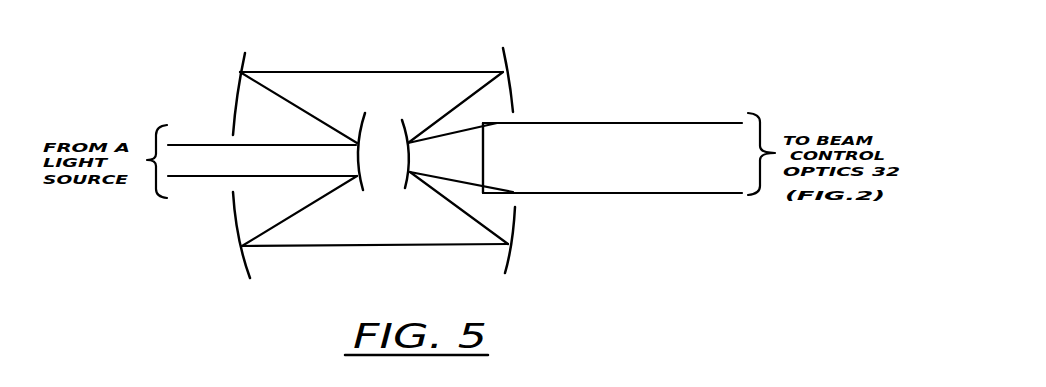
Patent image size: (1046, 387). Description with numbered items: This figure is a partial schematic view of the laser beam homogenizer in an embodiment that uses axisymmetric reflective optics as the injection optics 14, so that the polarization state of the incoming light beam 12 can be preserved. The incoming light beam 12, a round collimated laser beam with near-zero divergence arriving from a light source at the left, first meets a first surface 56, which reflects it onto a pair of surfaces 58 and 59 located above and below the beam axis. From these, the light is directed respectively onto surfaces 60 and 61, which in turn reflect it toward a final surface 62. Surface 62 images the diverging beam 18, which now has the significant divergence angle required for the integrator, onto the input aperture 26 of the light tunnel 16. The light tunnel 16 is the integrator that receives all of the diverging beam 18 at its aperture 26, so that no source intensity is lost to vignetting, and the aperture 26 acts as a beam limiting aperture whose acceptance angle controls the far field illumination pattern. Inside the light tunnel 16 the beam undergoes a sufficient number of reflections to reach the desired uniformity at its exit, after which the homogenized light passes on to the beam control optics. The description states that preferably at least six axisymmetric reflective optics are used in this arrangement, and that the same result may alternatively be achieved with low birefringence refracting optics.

The incoming light beam 12 is at (218, 170).
The injection optics lens 14 is at (572, 68).
The light tunnel 16 is at (615, 123).
The input beam 18 is at (452, 143).
The input aperture 26 is at (483, 145).
The first surface 56 is at (362, 118).
The surface 58 is at (241, 71).
The surface 59 is at (246, 272).
The surface 60 is at (505, 60).
The surface 61 is at (512, 262).
The surface 62 is at (403, 121).